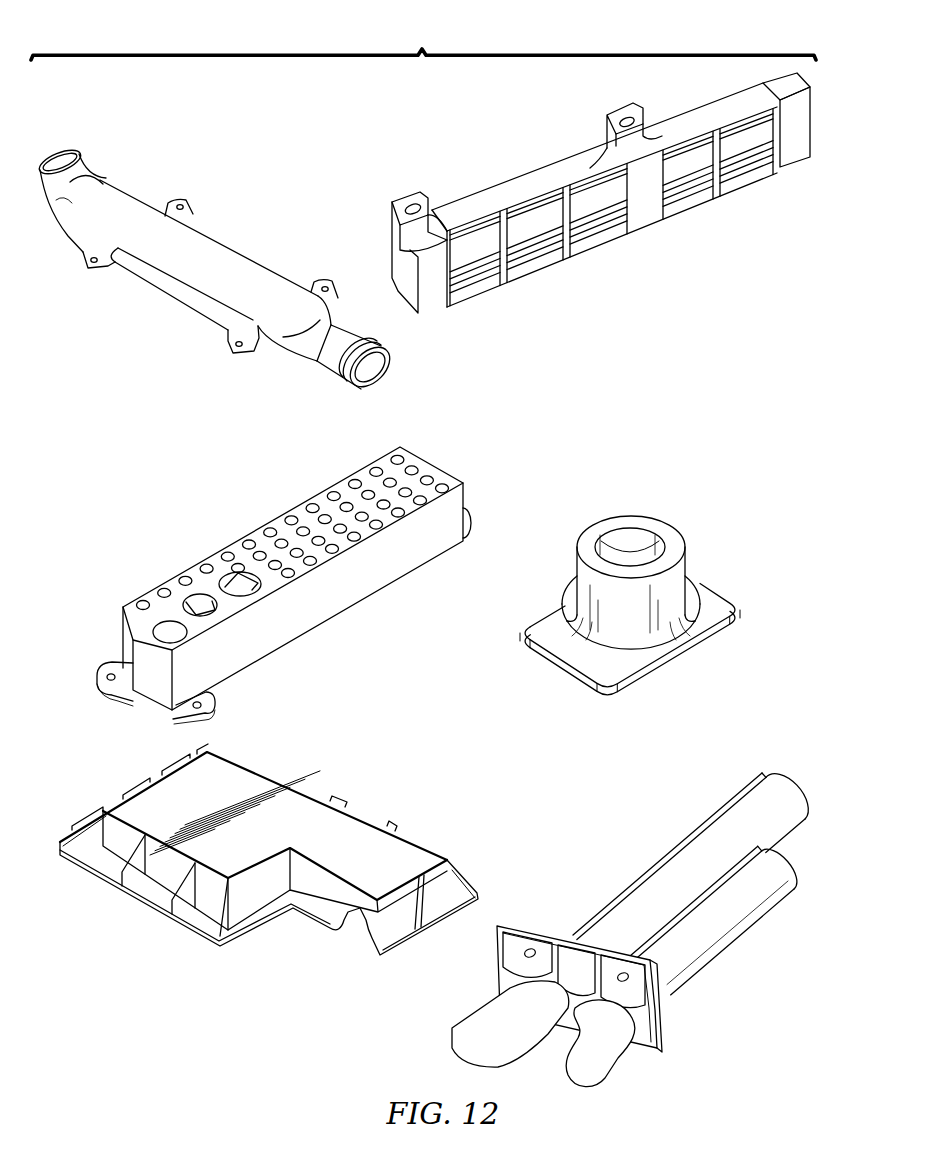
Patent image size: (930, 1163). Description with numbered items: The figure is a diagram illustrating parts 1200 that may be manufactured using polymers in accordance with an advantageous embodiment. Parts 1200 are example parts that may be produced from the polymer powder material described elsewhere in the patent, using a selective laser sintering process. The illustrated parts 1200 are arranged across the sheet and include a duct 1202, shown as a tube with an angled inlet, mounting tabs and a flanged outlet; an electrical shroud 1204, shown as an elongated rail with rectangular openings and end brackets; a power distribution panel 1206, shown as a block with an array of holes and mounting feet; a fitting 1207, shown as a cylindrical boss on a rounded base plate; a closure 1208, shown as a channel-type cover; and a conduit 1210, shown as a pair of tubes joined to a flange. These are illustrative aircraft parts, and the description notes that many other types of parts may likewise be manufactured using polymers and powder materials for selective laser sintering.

The parts 1200 is at (423, 42).
The duct 1202 is at (233, 241).
The electrical shroud 1204 is at (559, 153).
The power distribution panel 1206 is at (230, 533).
The fitting 1207 is at (713, 574).
The closure 1208 is at (191, 945).
The conduit 1210 is at (723, 963).